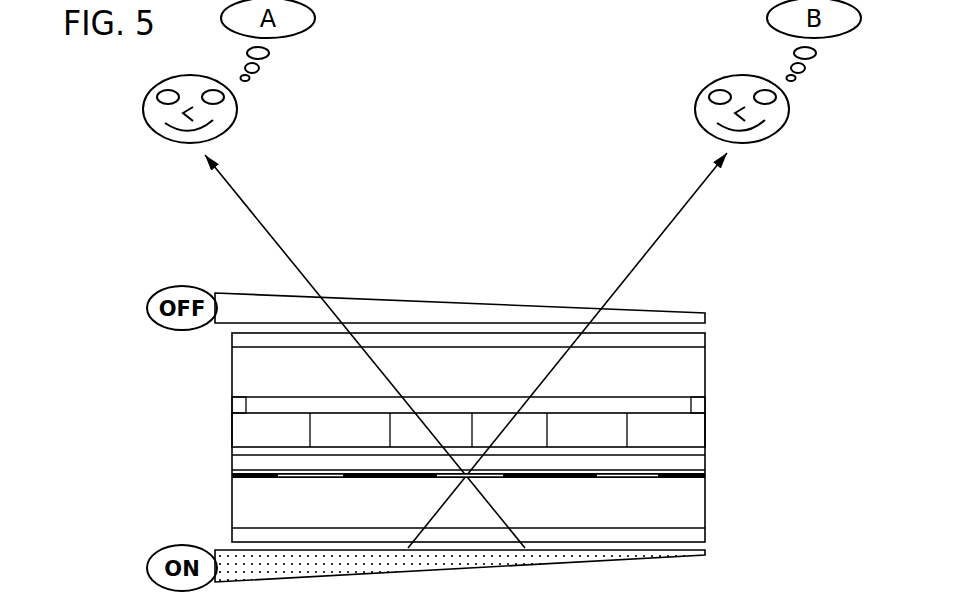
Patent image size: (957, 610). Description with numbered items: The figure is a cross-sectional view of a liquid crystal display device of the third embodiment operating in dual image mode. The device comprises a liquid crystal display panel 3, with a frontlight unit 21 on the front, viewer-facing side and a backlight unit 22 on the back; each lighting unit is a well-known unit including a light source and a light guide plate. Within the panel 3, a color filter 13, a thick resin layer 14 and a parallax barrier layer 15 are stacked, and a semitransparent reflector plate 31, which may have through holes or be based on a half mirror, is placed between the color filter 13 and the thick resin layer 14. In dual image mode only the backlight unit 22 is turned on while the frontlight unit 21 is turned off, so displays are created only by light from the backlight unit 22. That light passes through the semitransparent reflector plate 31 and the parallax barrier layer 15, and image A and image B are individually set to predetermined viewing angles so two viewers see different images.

The liquid crystal display panel 3 is at (545, 437).
The color filter 13 is at (700, 421).
The semitransparent reflector plate 31 is at (700, 450).
The thick resin layer 14 is at (700, 462).
The parallax barrier layer 15 is at (693, 479).
The frontlight unit 21 is at (700, 318).
The backlight unit 22 is at (700, 553).